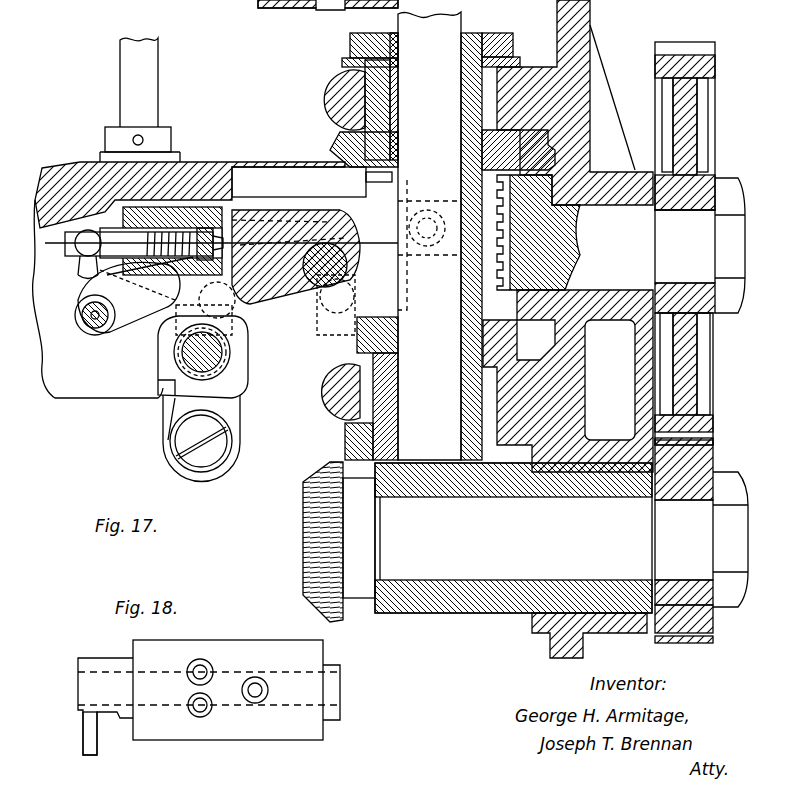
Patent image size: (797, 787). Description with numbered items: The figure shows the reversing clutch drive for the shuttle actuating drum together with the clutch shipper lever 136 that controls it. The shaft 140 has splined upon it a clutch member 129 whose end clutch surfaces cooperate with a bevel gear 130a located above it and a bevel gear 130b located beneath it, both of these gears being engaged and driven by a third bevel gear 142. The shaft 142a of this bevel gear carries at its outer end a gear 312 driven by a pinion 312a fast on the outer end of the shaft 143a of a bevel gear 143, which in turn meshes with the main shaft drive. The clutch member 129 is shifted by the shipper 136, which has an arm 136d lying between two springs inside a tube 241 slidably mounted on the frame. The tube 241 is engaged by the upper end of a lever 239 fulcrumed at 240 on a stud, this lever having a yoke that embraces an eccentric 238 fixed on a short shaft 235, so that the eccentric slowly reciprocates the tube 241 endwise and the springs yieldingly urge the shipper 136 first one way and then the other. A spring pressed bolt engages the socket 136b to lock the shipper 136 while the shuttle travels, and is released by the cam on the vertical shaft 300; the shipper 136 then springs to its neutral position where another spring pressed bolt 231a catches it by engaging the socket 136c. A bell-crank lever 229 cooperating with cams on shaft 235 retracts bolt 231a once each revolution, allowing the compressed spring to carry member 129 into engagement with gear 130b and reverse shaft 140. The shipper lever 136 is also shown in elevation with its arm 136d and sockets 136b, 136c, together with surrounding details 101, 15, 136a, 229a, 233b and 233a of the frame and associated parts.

In FIG. 17, the vertical shaft 300 is at (120, 83).
In FIG. 17, the housing 101 is at (55, 183).
In FIG. 17, the ball / pinion 15 is at (496, 226).
In FIG. 17, the spring pressed bolt 231a is at (221, 244).
In FIG. 17, the shipper 136 is at (304, 256).
In FIG. 18, the shipper 136 is at (290, 650).
In FIG. 17, the plunger / port 136a is at (238, 213).
In FIG. 18, the plunger / port 136a is at (182, 663).
In FIG. 17, the socket 136b is at (300, 300).
In FIG. 18, the socket 136b is at (196, 714).
In FIG. 18, the socket 136c is at (268, 690).
In FIG. 18, the arm of shipper 136d is at (83, 750).
In FIG. 17, the tube 241 is at (318, 305).
In FIG. 17, the bell-crank lever 229 is at (127, 298).
In FIG. 17, the lever pivot 229a is at (88, 326).
In FIG. 17, the lever hub 233b is at (160, 346).
In FIG. 17, the short shaft 235 is at (190, 352).
In FIG. 17, the eccentric 238 is at (250, 380).
In FIG. 17, the lever arm 233a is at (240, 400).
In FIG. 17, the lever 239 is at (165, 407).
In FIG. 17, the fulcrum 240 is at (180, 440).
In FIG. 17, the bevel gear 130a is at (338, 148).
In FIG. 17, the bevel gear 130b is at (386, 354).
In FIG. 17, the shaft 140 is at (429, 236).
In FIG. 17, the bevel gear 142 is at (480, 305).
In FIG. 17, the shaft of bevel gear 142a is at (655, 246).
In FIG. 17, the clutch member 129 is at (500, 222).
In FIG. 17, the gear 312 is at (712, 124).
In FIG. 17, the pinion 312a is at (710, 458).
In FIG. 17, the bevel gear 143 is at (303, 497).
In FIG. 17, the shaft of bevel gear 143a is at (513, 538).